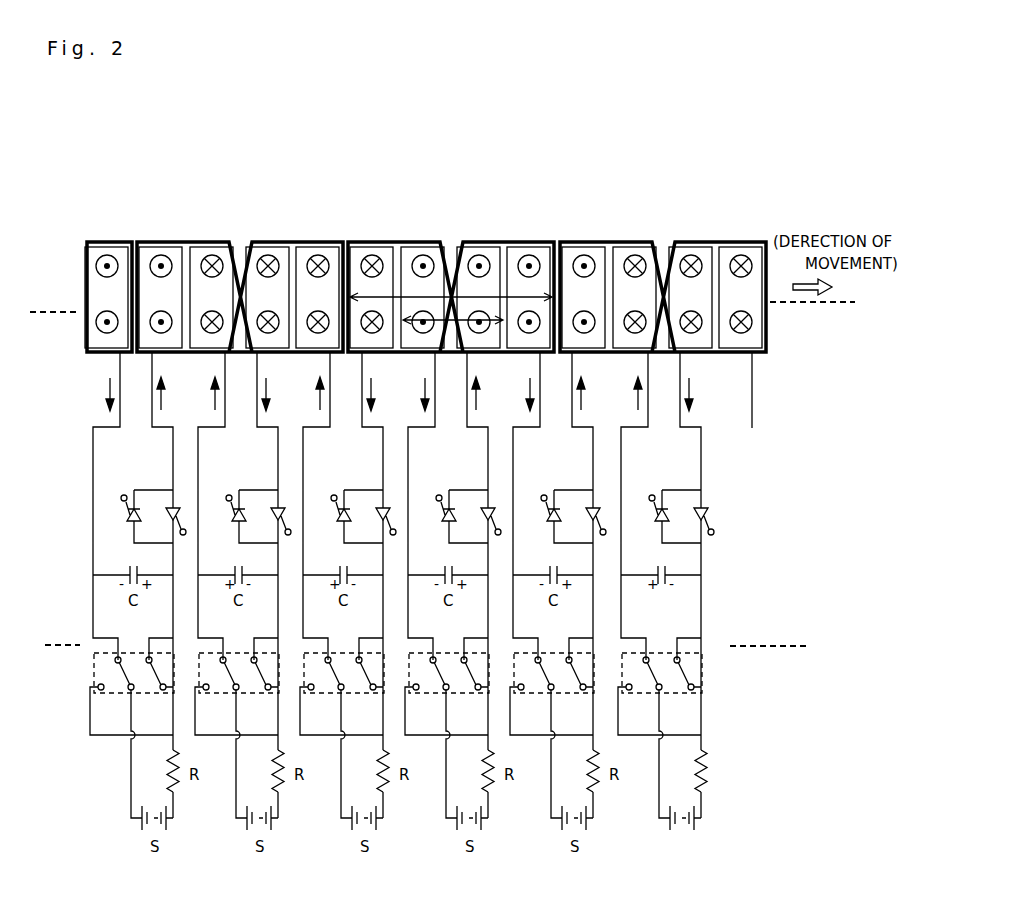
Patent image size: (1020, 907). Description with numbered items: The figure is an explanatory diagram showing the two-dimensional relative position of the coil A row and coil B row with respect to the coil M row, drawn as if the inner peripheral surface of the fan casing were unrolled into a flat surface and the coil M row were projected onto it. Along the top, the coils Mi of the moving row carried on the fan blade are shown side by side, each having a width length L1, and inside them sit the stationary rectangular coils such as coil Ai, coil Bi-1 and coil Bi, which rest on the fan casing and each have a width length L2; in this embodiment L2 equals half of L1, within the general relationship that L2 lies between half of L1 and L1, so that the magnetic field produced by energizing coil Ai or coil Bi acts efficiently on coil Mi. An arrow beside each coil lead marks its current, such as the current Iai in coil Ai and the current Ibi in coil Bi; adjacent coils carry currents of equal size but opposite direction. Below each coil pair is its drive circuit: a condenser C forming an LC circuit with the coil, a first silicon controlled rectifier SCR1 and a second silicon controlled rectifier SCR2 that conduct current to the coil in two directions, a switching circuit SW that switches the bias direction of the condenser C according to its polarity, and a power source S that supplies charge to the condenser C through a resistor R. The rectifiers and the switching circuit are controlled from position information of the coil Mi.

The coil Mi is at (177, 242).
The coil Ai is at (242, 242).
The coil Bi-1 is at (147, 240).
The coil Bi is at (358, 240).
The width length of coil Mi L1 is at (451, 290).
The width length of coil Ai or Bi L2 is at (453, 313).
The current flowing in coil Ai Iai is at (278, 393).
The current flowing in coil Bi Ibi is at (382, 393).
The first silicon controlled rectifier SCR1 is at (738, 528).
The second silicon controlled rectifier SCR2 is at (706, 481).
The condenser C is at (707, 595).
The switching circuit SW is at (686, 687).
The resistor R is at (721, 788).
The power source S is at (666, 838).